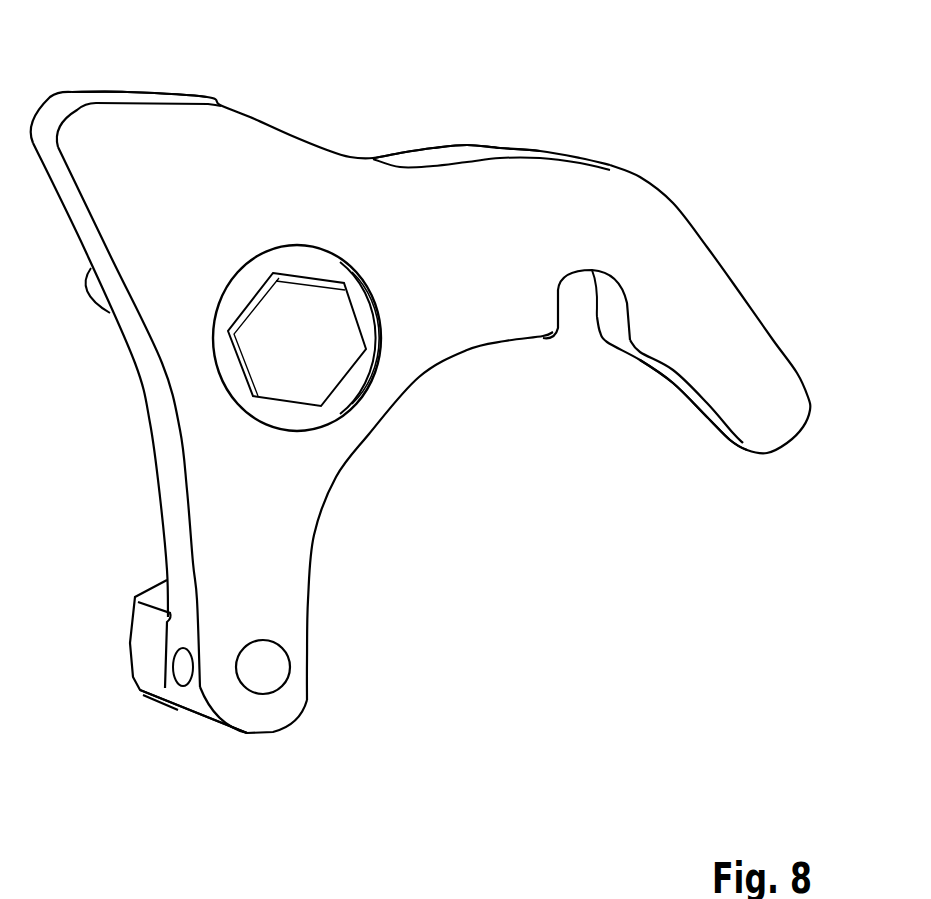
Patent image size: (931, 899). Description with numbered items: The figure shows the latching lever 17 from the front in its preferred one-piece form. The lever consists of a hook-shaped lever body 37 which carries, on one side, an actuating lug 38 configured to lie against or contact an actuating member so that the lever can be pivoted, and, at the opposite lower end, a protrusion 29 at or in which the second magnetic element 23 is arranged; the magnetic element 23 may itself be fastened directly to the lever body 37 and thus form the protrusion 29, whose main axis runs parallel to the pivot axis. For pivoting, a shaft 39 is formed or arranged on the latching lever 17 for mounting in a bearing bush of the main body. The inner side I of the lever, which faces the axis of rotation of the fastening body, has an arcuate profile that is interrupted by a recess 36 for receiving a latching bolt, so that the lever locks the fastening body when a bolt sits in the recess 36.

The latching lever 17 is at (697, 101).
The actuating lug 38 is at (131, 100).
The hook-shaped lever body 37 is at (460, 216).
The shaft 39 is at (92, 290).
The recess 36 is at (580, 310).
The inner side I is at (687, 403).
The second magnetic element 23 is at (145, 648).
The protrusion 29 is at (157, 729).